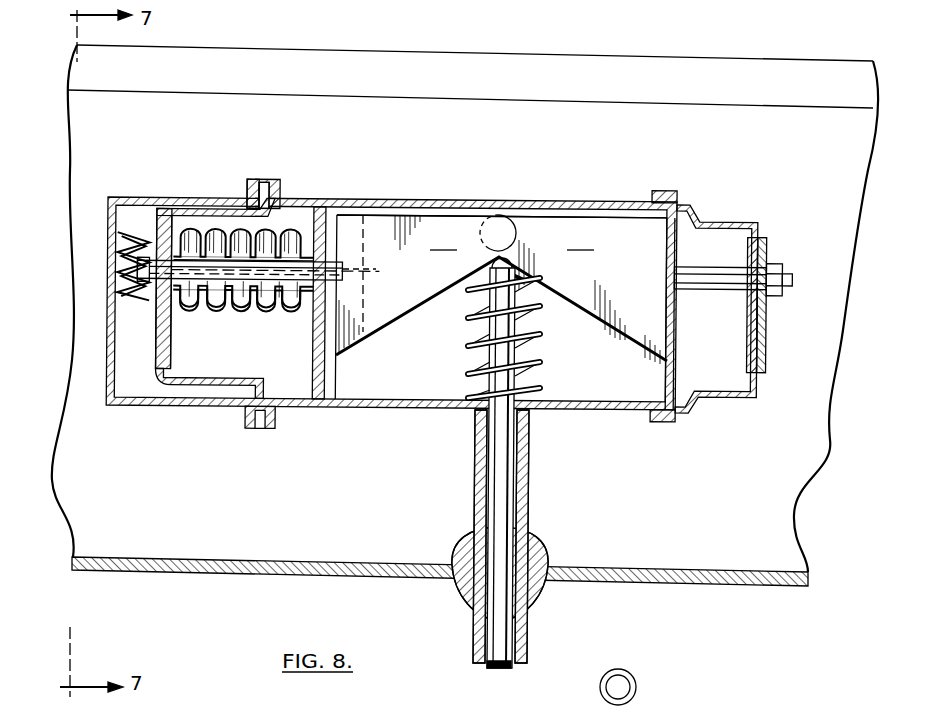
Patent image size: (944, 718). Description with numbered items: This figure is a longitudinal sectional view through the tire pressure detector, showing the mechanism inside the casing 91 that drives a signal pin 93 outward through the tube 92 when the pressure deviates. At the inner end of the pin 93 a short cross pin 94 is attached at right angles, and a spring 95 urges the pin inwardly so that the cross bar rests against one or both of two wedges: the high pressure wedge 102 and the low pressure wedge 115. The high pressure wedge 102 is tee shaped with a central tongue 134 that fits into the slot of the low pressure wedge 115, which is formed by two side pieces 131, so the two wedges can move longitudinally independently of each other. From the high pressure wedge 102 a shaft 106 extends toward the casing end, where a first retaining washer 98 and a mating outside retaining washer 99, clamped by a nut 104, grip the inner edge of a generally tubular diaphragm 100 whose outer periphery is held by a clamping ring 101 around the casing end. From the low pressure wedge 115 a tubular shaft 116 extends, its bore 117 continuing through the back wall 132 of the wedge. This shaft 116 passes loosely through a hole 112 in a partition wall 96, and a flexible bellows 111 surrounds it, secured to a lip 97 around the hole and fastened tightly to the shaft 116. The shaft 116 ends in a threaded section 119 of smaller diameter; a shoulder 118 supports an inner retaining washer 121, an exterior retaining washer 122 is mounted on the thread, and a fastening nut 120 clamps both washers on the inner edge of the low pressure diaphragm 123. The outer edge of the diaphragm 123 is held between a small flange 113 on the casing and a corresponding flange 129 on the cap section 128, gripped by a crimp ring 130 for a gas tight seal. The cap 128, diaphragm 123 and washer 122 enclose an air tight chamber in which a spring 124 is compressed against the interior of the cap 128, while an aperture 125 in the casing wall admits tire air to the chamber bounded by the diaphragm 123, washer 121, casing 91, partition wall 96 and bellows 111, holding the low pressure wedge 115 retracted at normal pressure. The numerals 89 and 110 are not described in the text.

The pin 89 is at (630, 676).
The casing 91 is at (420, 205).
The tube 92 is at (521, 637).
The pin 93 is at (496, 669).
The cross pin 94 is at (524, 282).
The spring 95 is at (536, 345).
The partition wall 96 is at (326, 376).
The lip 97 is at (315, 302).
The first retaining washer 98 is at (748, 320).
The outside retaining washer 99 is at (767, 334).
The diaphragm 100 is at (720, 398).
The clamping ring 101 is at (665, 196).
The high pressure wedge 102 is at (661, 360).
The nut 104 is at (776, 265).
The shaft 106 is at (728, 283).
The bushing 110 is at (538, 544).
The bellows 111 is at (267, 310).
The hole 112 is at (301, 240).
The flange 113 is at (276, 190).
The low pressure wedge 115 is at (443, 240).
The shaft 116 is at (241, 304).
The bore 117 is at (373, 268).
The shoulder 118 is at (162, 228).
The threaded section 119 is at (157, 320).
The fastening nut 120 is at (138, 268).
The inner retaining washer 121 is at (172, 320).
The exterior retaining washer 122 is at (157, 356).
The low pressure diaphragm 123 is at (200, 377).
The spring 124 is at (118, 243).
The aperture 125 is at (302, 201).
The cap section 128 is at (140, 406).
The flange 129 is at (249, 190).
The crimp ring 130 is at (263, 181).
The side piece 131 is at (470, 222).
The back wall 132 is at (362, 216).
The tongue 134 is at (580, 240).